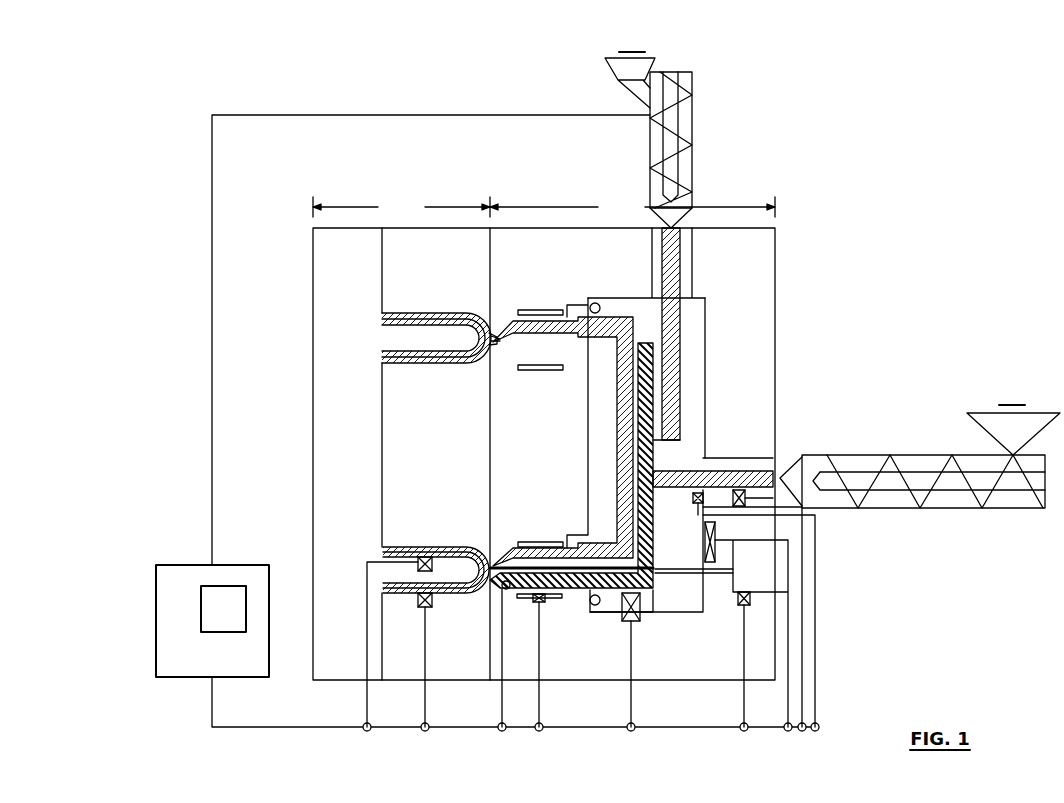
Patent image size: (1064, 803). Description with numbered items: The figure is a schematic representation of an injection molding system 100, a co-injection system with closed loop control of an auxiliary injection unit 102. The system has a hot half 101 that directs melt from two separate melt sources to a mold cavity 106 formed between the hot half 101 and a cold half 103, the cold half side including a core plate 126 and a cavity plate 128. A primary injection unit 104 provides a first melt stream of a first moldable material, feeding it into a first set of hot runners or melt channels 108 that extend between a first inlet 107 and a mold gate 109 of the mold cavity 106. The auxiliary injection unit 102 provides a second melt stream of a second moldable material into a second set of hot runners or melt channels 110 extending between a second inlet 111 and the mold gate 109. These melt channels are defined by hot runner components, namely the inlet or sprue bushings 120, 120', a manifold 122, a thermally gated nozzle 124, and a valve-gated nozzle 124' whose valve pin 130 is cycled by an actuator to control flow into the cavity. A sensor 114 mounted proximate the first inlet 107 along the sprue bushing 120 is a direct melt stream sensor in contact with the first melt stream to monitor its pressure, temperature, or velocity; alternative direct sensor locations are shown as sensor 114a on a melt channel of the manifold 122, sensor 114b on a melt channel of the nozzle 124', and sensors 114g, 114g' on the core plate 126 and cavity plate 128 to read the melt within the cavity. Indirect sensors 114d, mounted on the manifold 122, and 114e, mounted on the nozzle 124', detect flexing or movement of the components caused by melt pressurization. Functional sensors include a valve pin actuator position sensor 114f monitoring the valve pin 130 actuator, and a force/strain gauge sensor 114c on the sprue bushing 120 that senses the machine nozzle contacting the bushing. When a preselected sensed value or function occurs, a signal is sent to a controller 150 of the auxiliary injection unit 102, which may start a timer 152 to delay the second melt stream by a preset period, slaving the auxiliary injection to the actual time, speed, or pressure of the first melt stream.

The injection molding system 100 is at (915, 77).
The hot half 101 is at (632, 206).
The auxiliary injection unit 102 is at (692, 141).
The cold half 103 is at (401, 206).
The primary injection unit 104 is at (940, 510).
The mold cavity 106 is at (412, 309).
The first inlet 107 is at (781, 466).
The first set of hot runners or melt channels 108 is at (688, 470).
The mold gate 109 is at (490, 348).
The second set of hot runners or melt channels 110 is at (682, 325).
The second inlet 111 is at (683, 222).
The sensor 114 is at (747, 497).
The sensor 114a is at (637, 612).
The sensor 114b is at (508, 590).
The sensor 114c is at (703, 498).
The sensor 114d is at (716, 538).
The sensor 114e is at (545, 601).
The valve pin actuator position sensor 114f is at (750, 598).
The sensor 114g is at (404, 605).
The sensor 114g' is at (454, 660).
The inlet or sprue bushing 120 is at (737, 430).
The inlet or sprue bushing 120' is at (752, 334).
The manifold 122 is at (622, 298).
The thermally gated nozzle 124 is at (549, 378).
The valve-gated nozzle 124' is at (538, 532).
The core plate 126 is at (337, 449).
The cavity plate 128 is at (422, 449).
The valve pin 130 is at (692, 575).
The controller 150 is at (150, 656).
The timer 152 is at (208, 617).